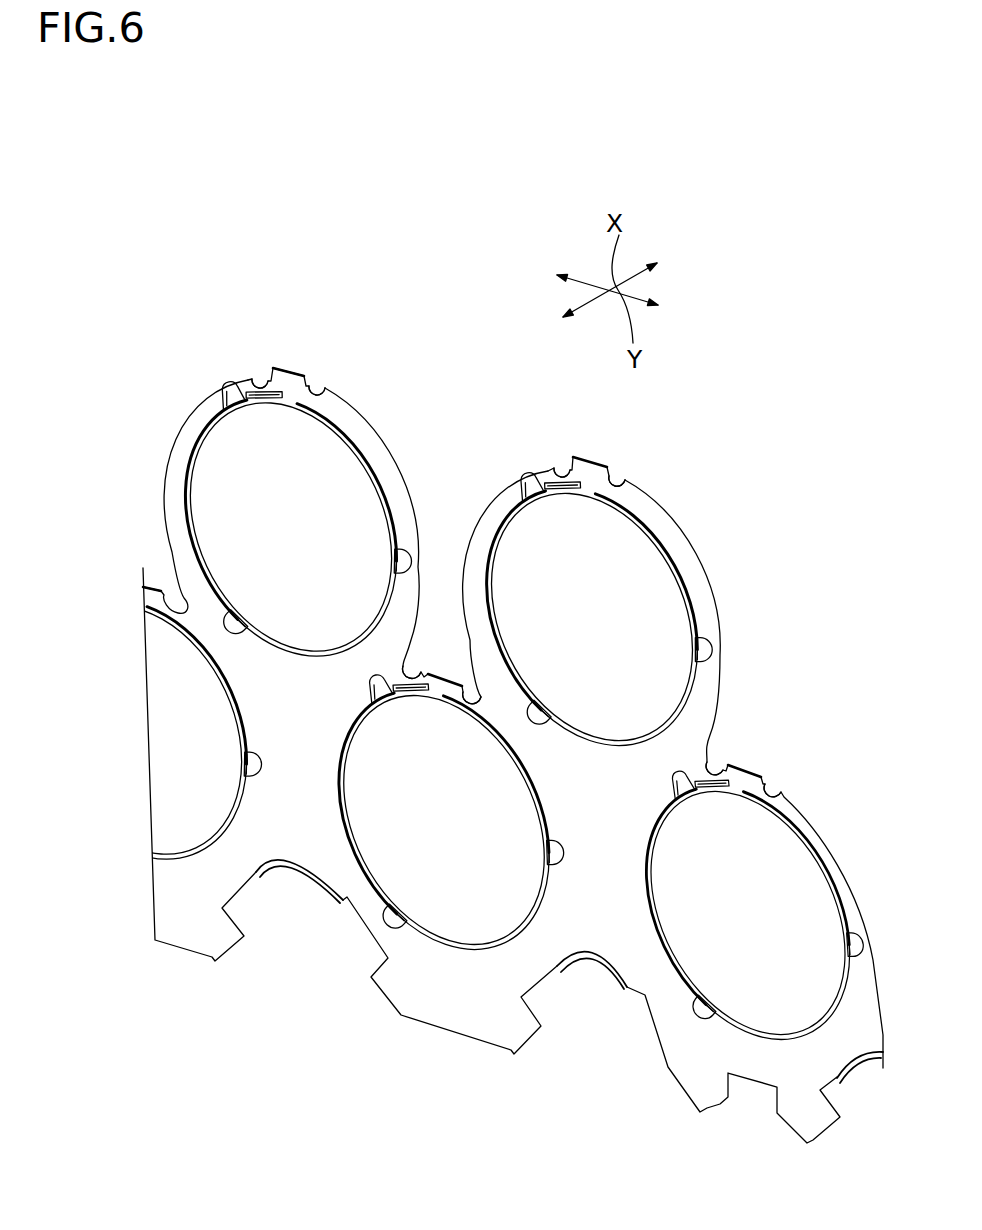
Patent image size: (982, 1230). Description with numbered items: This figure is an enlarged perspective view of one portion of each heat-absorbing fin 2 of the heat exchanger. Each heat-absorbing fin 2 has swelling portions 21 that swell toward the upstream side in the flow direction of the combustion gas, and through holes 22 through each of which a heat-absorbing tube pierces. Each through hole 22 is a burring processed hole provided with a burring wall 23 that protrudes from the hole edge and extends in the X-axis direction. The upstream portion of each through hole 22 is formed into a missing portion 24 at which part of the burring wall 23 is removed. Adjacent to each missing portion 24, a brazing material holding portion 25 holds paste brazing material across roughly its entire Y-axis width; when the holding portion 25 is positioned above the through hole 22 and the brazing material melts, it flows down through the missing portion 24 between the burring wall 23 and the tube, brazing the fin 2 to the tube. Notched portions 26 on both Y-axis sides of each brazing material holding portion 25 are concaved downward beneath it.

The heat-absorbing fin 2 is at (680, 478).
The swelling portion 21 is at (487, 520).
The through hole 22 is at (356, 473).
The burring wall 23 is at (378, 520).
The missing portion 24 is at (283, 408).
The brazing material holding portion 25 is at (289, 368).
The notched portion 26 is at (258, 376).